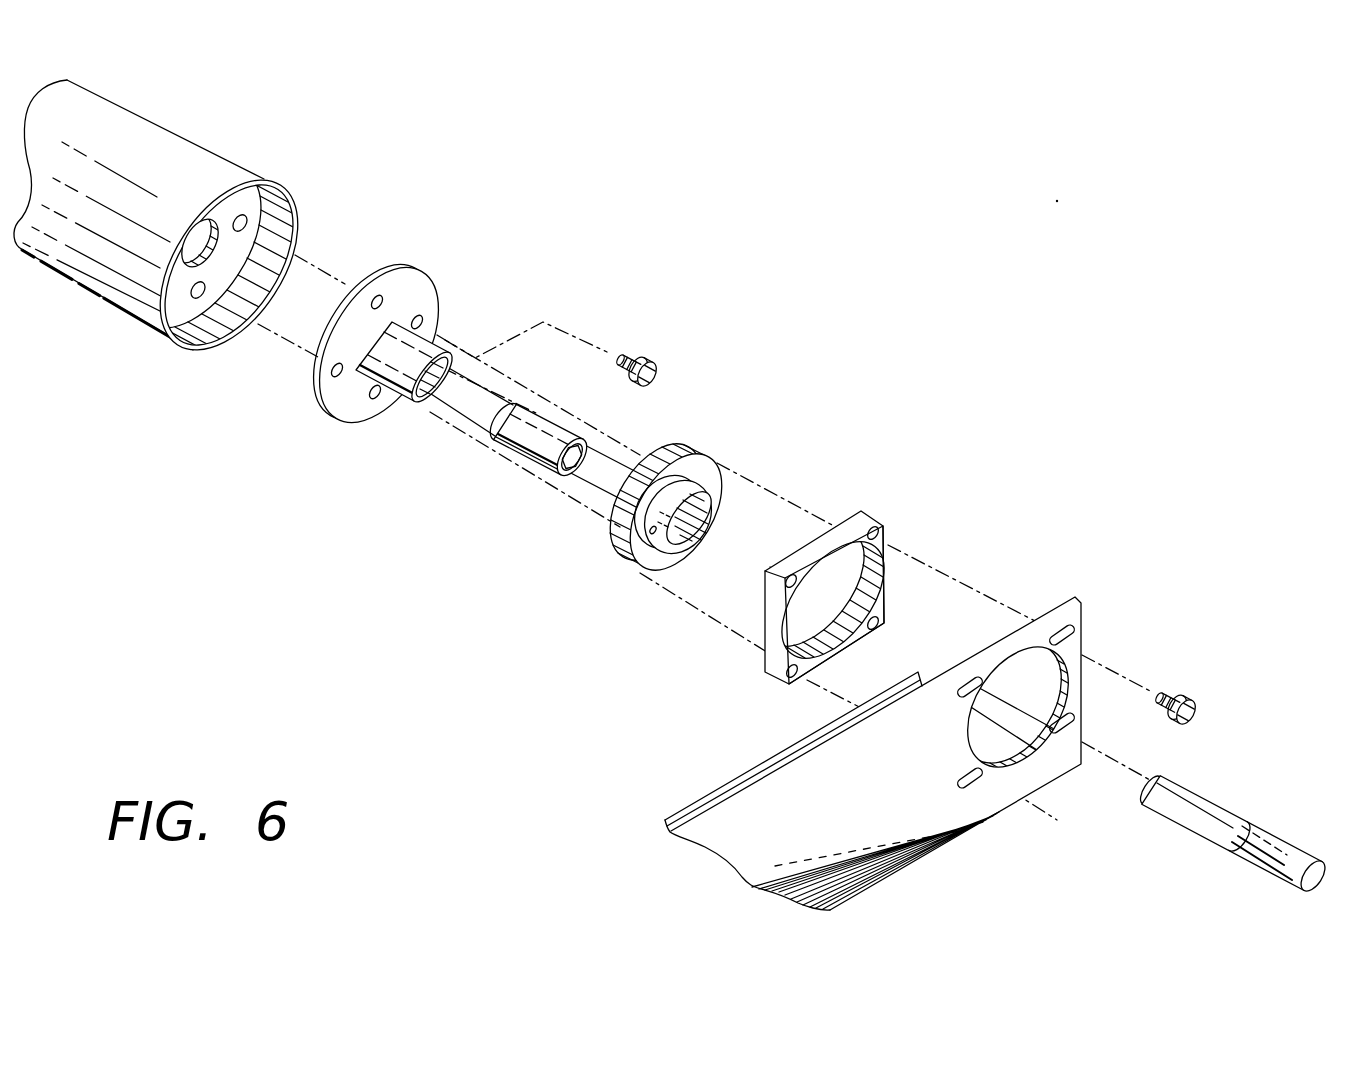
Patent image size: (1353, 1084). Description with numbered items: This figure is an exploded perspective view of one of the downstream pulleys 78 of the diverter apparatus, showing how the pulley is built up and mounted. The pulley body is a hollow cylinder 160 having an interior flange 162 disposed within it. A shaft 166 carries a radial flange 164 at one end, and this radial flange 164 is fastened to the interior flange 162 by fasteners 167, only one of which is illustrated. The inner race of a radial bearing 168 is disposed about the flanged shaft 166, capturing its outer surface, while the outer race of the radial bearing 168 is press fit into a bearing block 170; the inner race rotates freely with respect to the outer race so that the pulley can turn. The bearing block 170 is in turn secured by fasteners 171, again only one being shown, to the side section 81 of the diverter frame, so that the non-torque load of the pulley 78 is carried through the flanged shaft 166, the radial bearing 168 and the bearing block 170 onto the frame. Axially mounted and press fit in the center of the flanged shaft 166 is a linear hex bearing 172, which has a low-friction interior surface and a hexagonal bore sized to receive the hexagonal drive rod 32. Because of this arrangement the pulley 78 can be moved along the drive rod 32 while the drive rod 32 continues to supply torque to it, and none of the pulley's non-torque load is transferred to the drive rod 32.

The drive rod 32 is at (1240, 780).
The downstream pulleys 78 is at (592, 180).
The side section 81 is at (1080, 613).
The hollow cylinder 160 is at (253, 127).
The interior flange 162 is at (185, 307).
The radial flange 164 is at (455, 270).
The shaft 166 is at (382, 362).
The fasteners 167 is at (630, 350).
The radial bearing 168 is at (700, 418).
The bearing block 170 is at (874, 488).
The fasteners 171 is at (1168, 690).
The linear hex bearing 172 is at (552, 432).